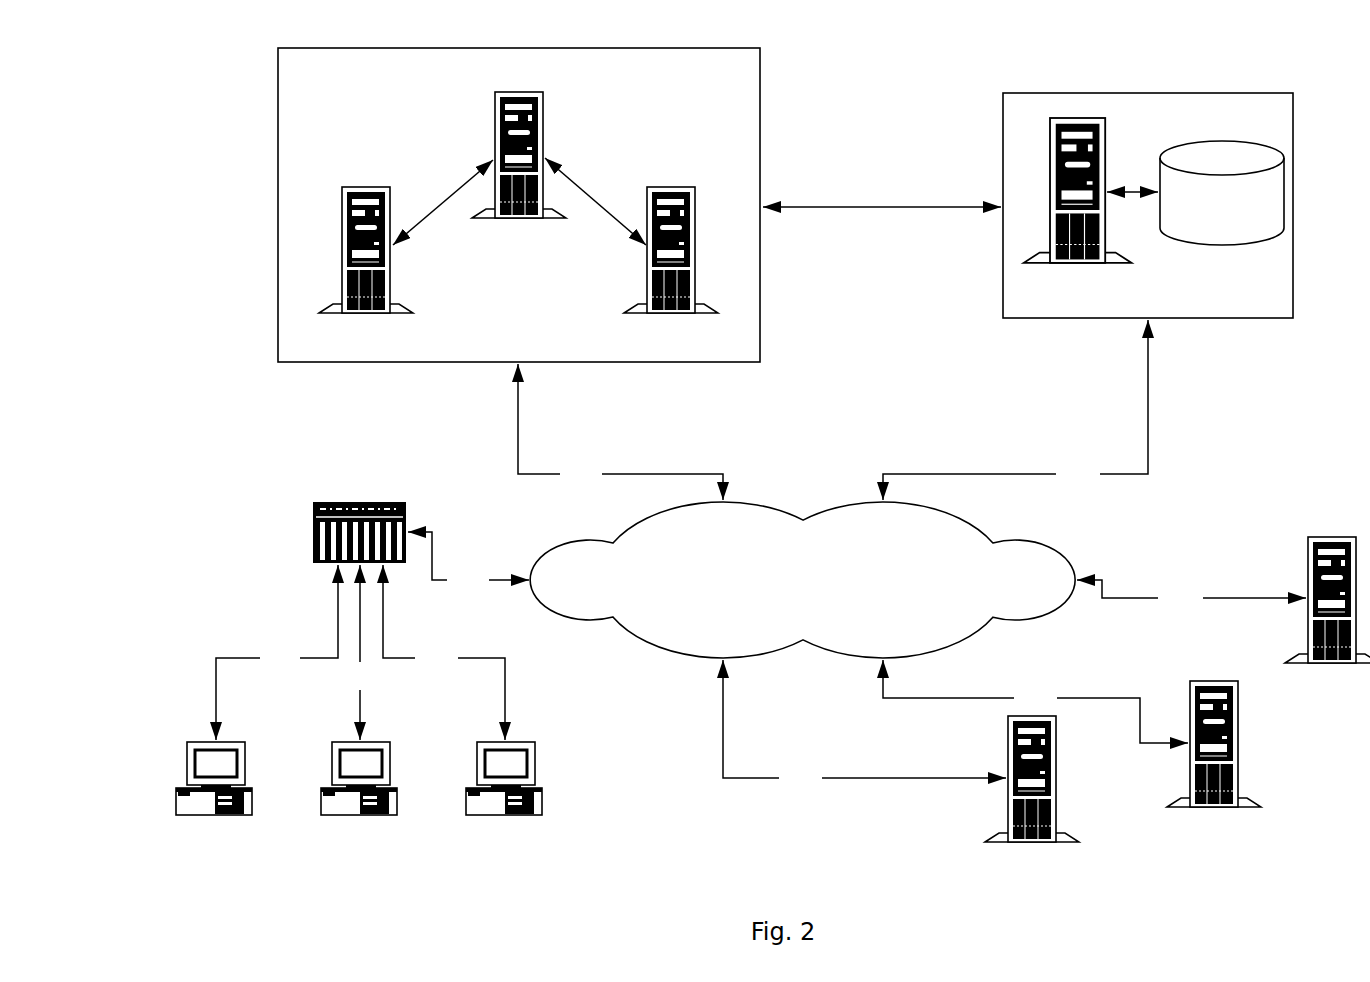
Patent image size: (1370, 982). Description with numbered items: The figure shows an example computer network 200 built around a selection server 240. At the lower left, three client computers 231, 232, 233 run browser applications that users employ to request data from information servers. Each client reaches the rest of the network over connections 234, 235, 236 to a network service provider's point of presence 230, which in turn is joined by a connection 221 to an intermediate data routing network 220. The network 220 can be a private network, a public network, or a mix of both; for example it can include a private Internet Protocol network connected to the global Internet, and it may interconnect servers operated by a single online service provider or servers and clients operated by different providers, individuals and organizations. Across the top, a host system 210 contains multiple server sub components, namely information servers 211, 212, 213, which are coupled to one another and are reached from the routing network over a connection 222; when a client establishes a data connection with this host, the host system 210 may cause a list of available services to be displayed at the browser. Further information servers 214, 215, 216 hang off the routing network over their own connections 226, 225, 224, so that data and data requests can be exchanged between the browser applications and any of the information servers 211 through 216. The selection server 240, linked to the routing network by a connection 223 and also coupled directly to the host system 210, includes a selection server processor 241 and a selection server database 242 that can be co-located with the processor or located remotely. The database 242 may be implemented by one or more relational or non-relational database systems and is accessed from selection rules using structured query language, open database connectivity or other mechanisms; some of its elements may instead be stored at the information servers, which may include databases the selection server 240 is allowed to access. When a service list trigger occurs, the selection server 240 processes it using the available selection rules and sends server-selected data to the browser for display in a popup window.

The network 200 is at (866, 77).
The host system 210 is at (384, 116).
The information server 211 is at (366, 266).
The information server 212 is at (519, 172).
The information server 213 is at (671, 266).
The information server 214 is at (1032, 795).
The information server 215 is at (1214, 760).
The information server 216 is at (1327, 616).
The intermediate data routing network 220 is at (802, 580).
The connection 221 is at (468, 562).
The connection 222 is at (620, 432).
The connection 223 is at (1015, 410).
The connection 224 is at (1191, 595).
The connection 225 is at (1035, 701).
The connection 226 is at (864, 725).
The point of presence 230 is at (313, 532).
The client computer 231 is at (214, 795).
The client computer 232 is at (359, 795).
The client computer 233 is at (504, 795).
The connection 234 is at (277, 652).
The connection 235 is at (360, 652).
The connection 236 is at (444, 652).
The selection server 240 is at (1150, 93).
The selection server processor 241 is at (1078, 208).
The selection server database 242 is at (1222, 193).